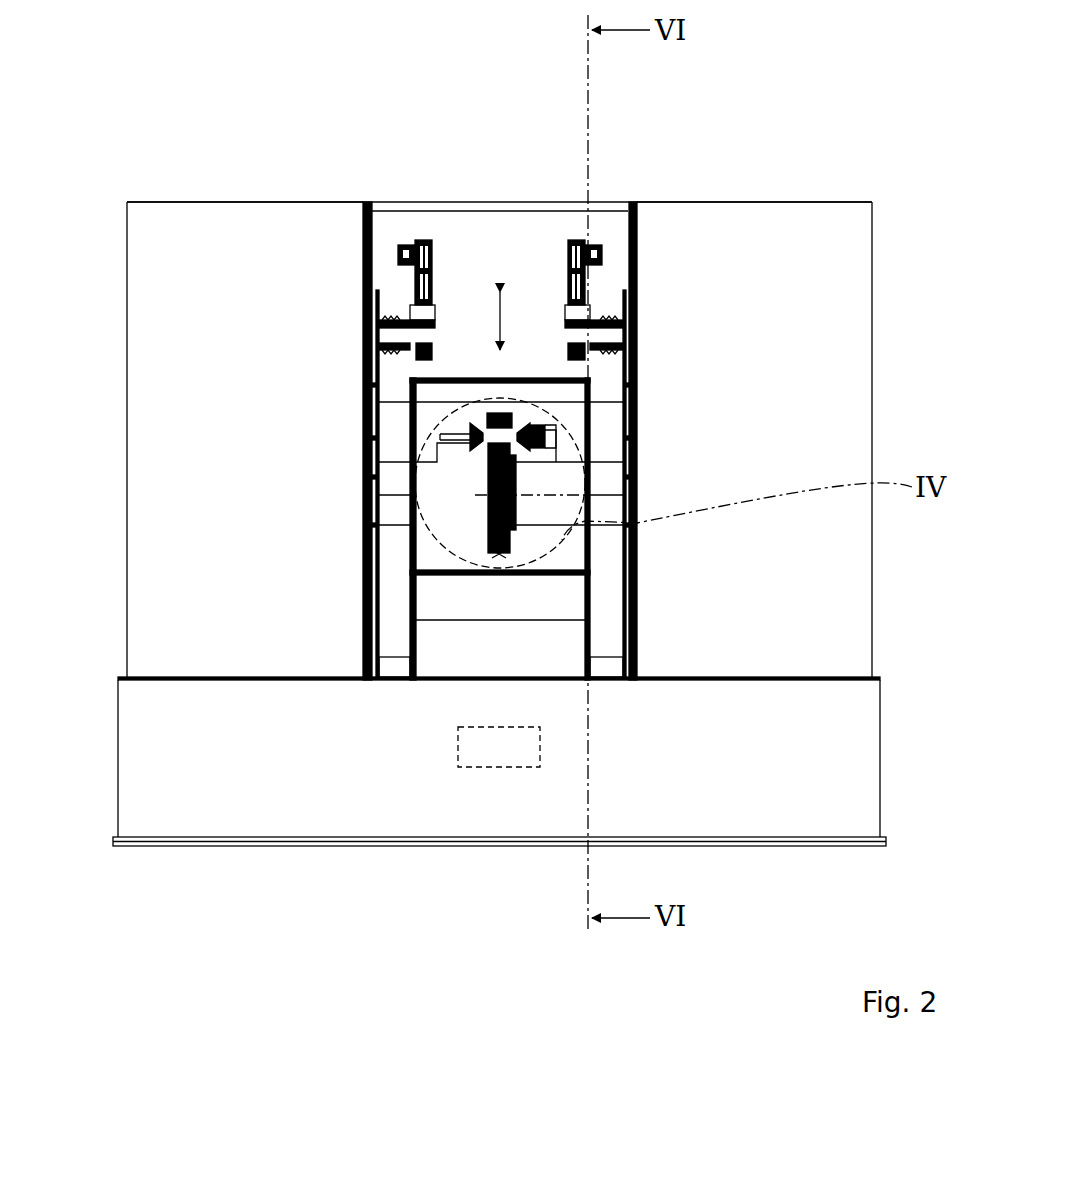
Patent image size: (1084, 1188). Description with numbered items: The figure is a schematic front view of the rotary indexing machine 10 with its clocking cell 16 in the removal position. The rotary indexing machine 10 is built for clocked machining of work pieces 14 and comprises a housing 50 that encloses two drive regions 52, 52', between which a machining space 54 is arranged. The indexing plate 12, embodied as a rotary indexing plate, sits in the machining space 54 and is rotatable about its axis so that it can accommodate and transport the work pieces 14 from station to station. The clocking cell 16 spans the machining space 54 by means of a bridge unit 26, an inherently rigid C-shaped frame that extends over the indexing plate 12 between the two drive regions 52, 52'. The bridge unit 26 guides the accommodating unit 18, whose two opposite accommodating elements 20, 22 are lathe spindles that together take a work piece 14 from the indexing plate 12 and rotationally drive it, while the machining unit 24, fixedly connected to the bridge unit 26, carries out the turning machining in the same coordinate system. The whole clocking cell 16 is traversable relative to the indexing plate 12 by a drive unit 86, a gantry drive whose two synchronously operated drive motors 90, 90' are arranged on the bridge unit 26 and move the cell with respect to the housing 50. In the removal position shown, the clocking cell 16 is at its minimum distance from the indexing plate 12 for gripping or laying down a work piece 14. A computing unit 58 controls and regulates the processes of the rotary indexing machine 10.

The rotary indexing machine 10 is at (798, 156).
The indexing plate 12 is at (480, 508).
The work piece 14 is at (410, 473).
The clocking cell 16 is at (535, 278).
The accommodating unit 18 is at (570, 447).
The accommodating element 20 is at (416, 445).
The accommodating element 22 is at (550, 437).
The machining unit 24 is at (524, 420).
The bridge unit 26 is at (472, 378).
The housing 50 is at (182, 748).
The drive region 52 is at (205, 439).
The drive region 52' is at (795, 439).
The machining space 54 is at (493, 625).
The computing unit 58 is at (500, 768).
The drive unit 86 is at (393, 247).
The drive motor 90 is at (241, 300).
The drive motor 90' is at (759, 300).